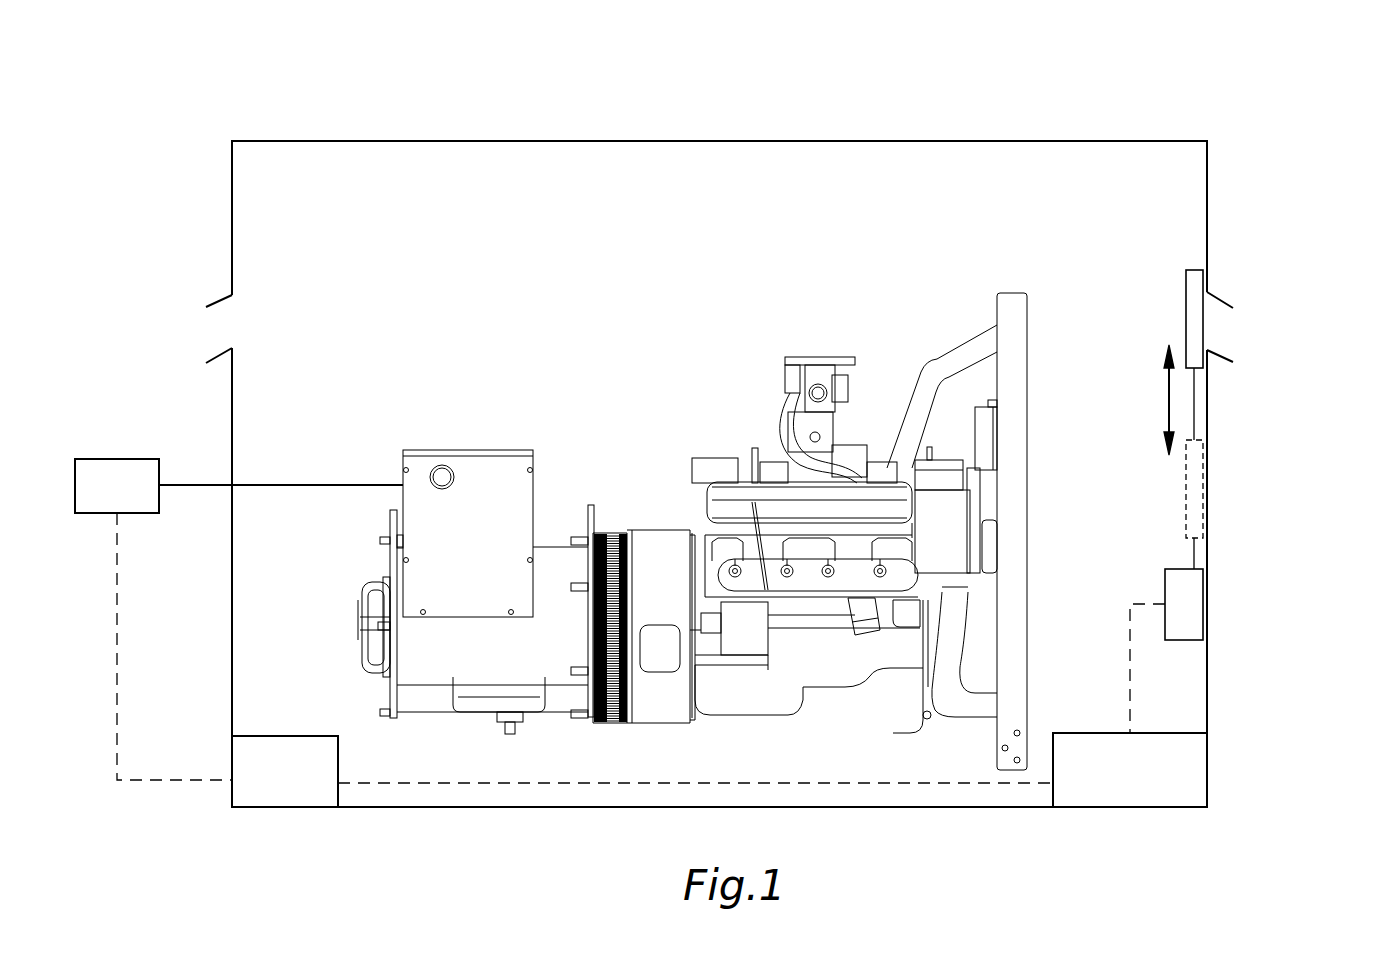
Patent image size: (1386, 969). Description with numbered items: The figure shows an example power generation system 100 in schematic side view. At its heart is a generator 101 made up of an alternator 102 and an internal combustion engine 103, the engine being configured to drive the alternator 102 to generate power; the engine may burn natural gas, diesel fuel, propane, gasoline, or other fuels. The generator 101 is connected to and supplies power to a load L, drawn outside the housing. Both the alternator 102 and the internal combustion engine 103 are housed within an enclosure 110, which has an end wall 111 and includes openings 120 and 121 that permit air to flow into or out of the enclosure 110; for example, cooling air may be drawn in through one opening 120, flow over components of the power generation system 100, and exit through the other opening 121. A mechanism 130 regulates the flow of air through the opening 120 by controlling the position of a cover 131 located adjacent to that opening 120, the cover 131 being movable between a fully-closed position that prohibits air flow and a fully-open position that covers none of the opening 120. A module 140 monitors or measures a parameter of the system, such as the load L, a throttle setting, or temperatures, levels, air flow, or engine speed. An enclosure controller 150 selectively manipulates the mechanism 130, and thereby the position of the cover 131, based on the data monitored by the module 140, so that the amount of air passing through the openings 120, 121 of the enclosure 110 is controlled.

The power generation system 100 is at (1291, 113).
The generator 101 is at (740, 303).
The alternator 102 is at (430, 700).
The internal combustion engine 103 is at (748, 715).
The enclosure 110 is at (1208, 222).
The end wall 111 is at (1208, 175).
The opening 120 is at (1225, 333).
The opening 121 is at (215, 332).
The mechanism 130 is at (1183, 641).
The cover 131 is at (1186, 288).
The module 140 is at (280, 807).
The enclosure controller 150 is at (1130, 807).
The load L is at (148, 459).